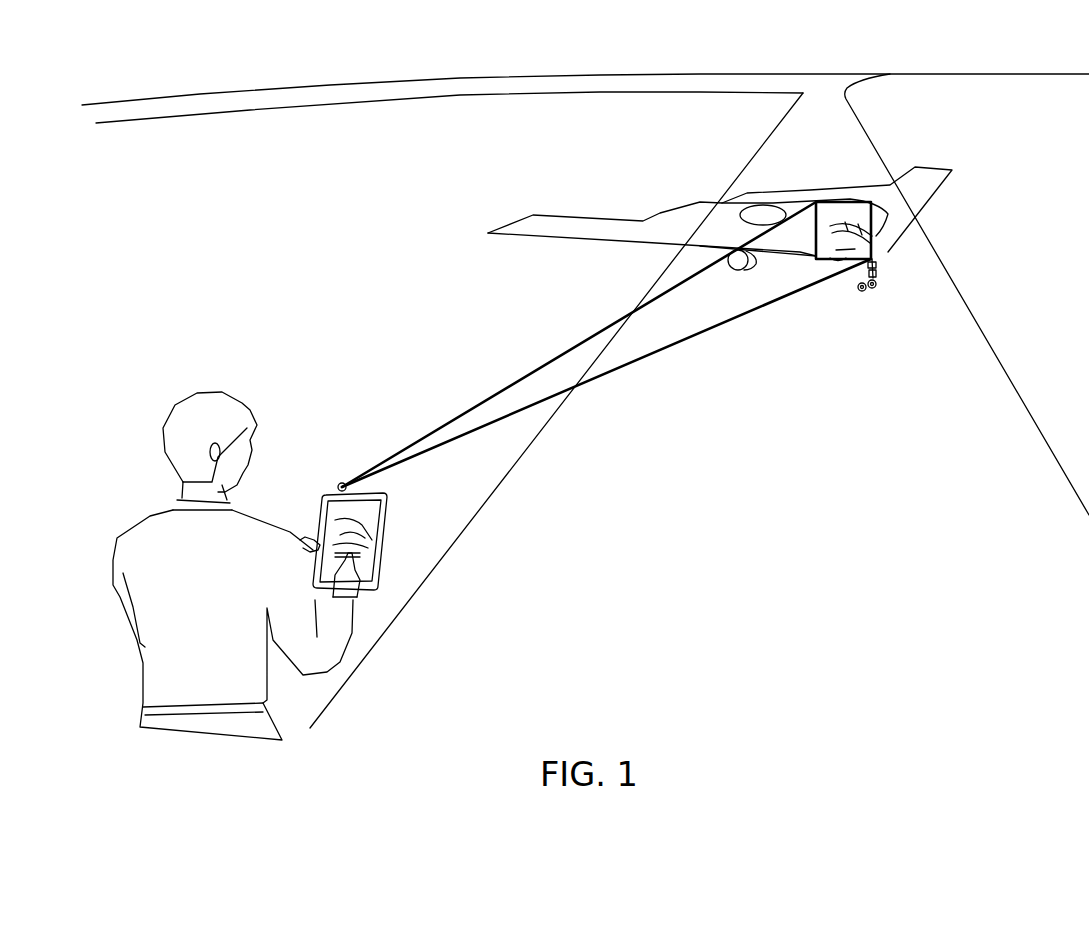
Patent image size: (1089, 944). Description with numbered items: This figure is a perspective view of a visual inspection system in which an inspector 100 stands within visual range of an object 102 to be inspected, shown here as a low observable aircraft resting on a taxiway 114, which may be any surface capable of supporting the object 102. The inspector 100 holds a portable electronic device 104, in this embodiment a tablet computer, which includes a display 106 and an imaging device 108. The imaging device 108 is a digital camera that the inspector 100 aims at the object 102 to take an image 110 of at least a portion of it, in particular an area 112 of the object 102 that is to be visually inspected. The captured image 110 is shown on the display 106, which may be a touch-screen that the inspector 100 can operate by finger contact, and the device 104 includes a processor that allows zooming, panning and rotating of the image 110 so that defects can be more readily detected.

The inspector 100 is at (157, 523).
The object 102 is at (688, 217).
The portable electronic device 104 is at (396, 518).
The display 106 is at (378, 506).
The imaging device 108 is at (343, 483).
The image 110 is at (362, 553).
The area 112 is at (878, 257).
The taxiway 114 is at (955, 352).